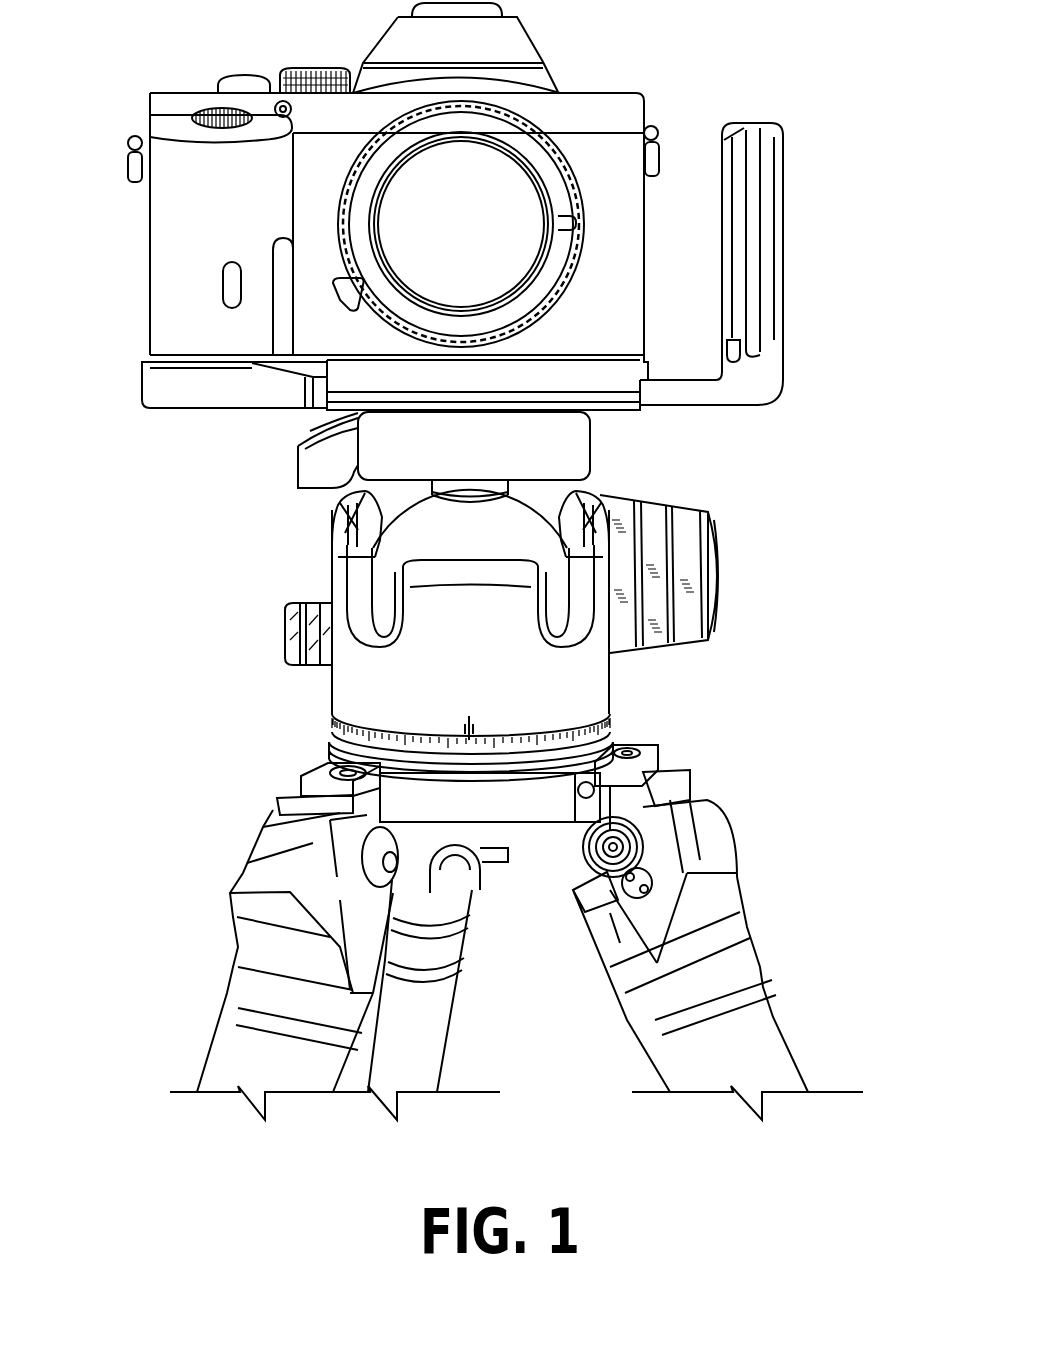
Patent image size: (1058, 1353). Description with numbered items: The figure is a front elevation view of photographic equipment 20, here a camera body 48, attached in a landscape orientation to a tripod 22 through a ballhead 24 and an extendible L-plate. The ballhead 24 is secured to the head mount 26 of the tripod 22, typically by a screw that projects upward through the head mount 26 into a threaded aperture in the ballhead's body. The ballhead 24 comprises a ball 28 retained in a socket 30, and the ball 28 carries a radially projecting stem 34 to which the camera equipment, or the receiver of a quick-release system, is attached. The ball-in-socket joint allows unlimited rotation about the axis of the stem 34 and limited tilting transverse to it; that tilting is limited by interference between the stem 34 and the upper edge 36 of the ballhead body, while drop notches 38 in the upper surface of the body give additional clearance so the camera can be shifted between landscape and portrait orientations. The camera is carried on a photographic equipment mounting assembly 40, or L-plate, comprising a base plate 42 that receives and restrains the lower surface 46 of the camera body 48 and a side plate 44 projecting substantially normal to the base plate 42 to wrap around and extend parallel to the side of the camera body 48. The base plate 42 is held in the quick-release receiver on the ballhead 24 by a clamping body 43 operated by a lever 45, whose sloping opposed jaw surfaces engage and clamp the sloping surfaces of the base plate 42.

The photographic equipment 20 is at (353, 190).
The tripod 22 is at (786, 874).
The ballhead 24 is at (652, 691).
The head mount 26 is at (550, 838).
The ball 28 is at (459, 543).
The socket 30 is at (333, 528).
The stem 34 is at (432, 486).
The upper edge of the ballhead body 36 is at (300, 425).
The drop notch 38 is at (335, 612).
The photographic equipment mounting assembly 40 is at (795, 249).
The base plate 42 is at (462, 388).
The clamping body 43 is at (592, 420).
The side plate 44 is at (775, 125).
The lever 45 is at (298, 468).
The lower surface of the camera body 46 is at (172, 373).
The camera body 48 is at (145, 272).